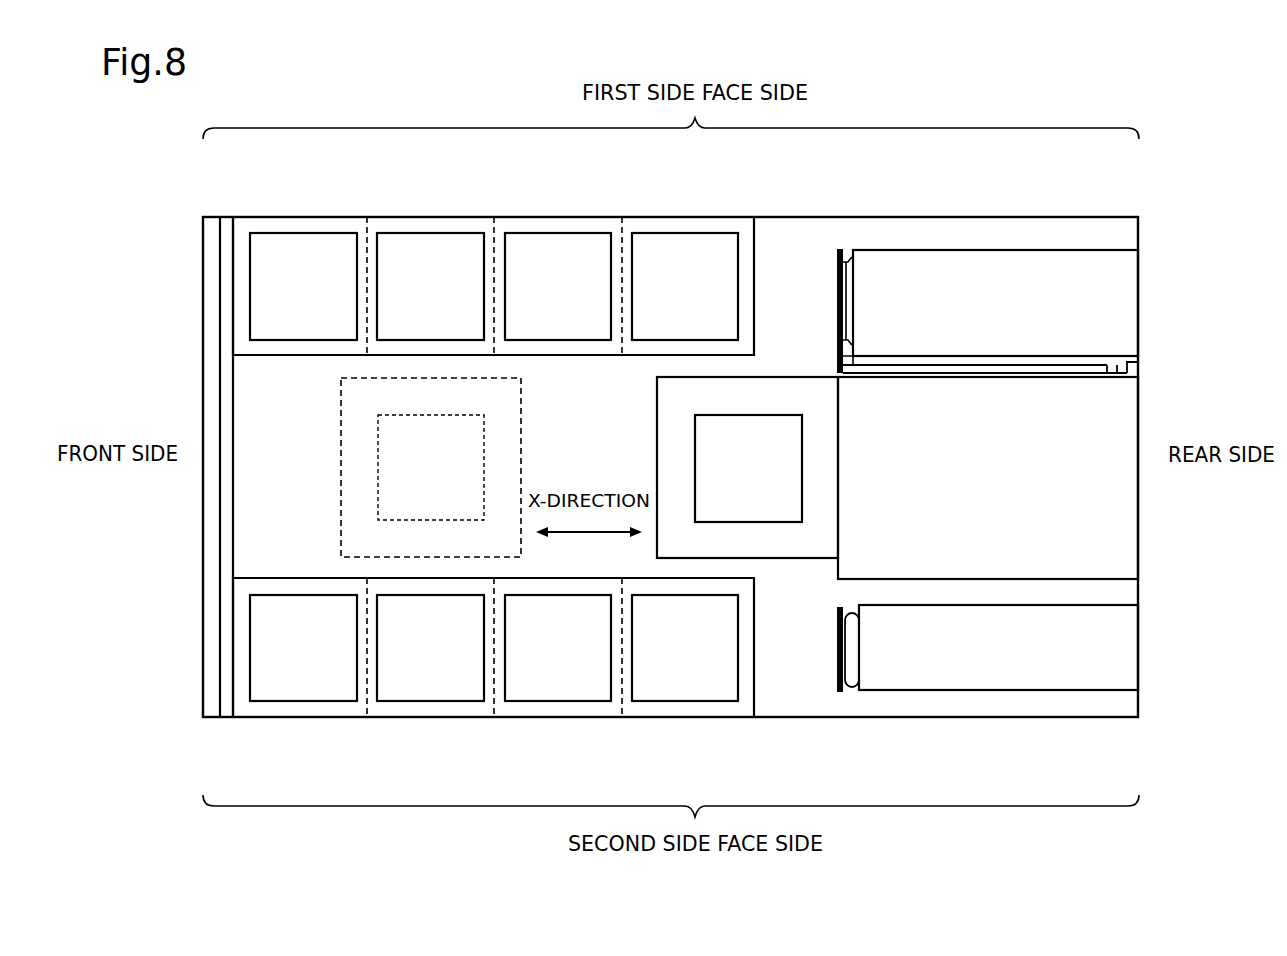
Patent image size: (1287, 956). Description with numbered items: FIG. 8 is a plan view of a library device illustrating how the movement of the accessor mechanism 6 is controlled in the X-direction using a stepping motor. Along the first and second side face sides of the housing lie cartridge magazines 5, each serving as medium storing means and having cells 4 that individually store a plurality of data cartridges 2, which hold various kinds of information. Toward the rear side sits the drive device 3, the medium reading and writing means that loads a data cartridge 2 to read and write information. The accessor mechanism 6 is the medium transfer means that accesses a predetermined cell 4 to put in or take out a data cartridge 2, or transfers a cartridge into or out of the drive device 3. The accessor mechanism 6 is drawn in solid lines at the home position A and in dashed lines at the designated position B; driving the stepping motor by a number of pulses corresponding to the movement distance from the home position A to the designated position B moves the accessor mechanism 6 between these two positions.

The data cartridge 2 is at (311, 302).
The drive device 3 is at (1127, 564).
The cell 4 is at (658, 223).
The cartridge magazine 5 is at (278, 217).
The accessor mechanism 6 is at (341, 436).
The home position A is at (797, 377).
The designated position B is at (341, 510).